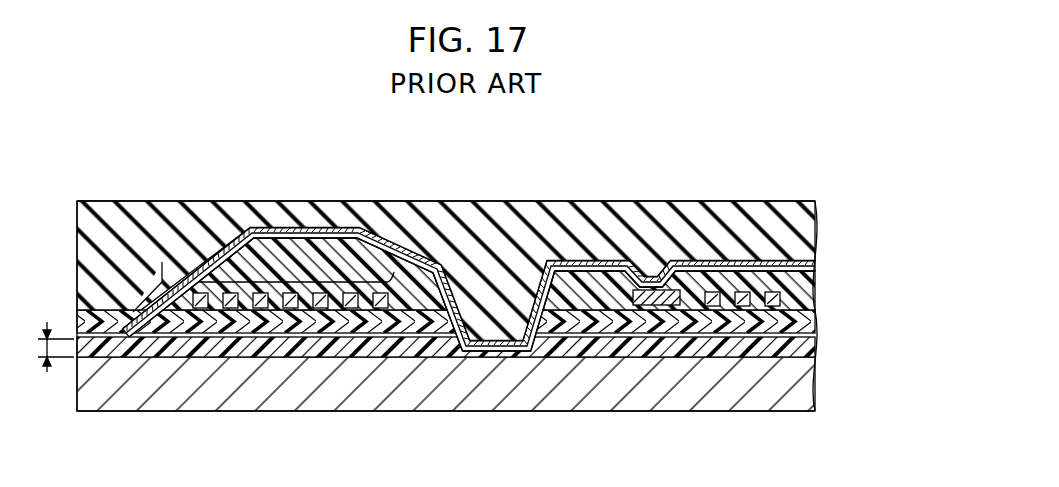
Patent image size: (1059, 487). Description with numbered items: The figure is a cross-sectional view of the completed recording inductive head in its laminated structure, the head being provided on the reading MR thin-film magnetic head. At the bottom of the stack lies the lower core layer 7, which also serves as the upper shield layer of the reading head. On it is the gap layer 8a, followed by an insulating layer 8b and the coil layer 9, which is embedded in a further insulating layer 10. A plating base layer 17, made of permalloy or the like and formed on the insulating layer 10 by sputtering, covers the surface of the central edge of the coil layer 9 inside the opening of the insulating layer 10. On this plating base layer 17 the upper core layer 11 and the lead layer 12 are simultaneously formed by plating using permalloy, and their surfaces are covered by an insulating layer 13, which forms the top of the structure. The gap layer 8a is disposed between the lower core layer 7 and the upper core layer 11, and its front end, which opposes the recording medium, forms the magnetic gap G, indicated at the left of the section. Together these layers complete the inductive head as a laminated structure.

The lower core layer 7 is at (487, 380).
The gap layer 8a is at (242, 343).
The insulating layer 8b is at (357, 308).
The coil layer 9 is at (290, 283).
The insulating layer 10 is at (355, 258).
The upper core layer 11 is at (436, 264).
The lead layer 12 is at (637, 260).
The insulating layer 13 is at (502, 253).
The plating base layer 17 is at (394, 240).
The magnetic gap G is at (45, 347).